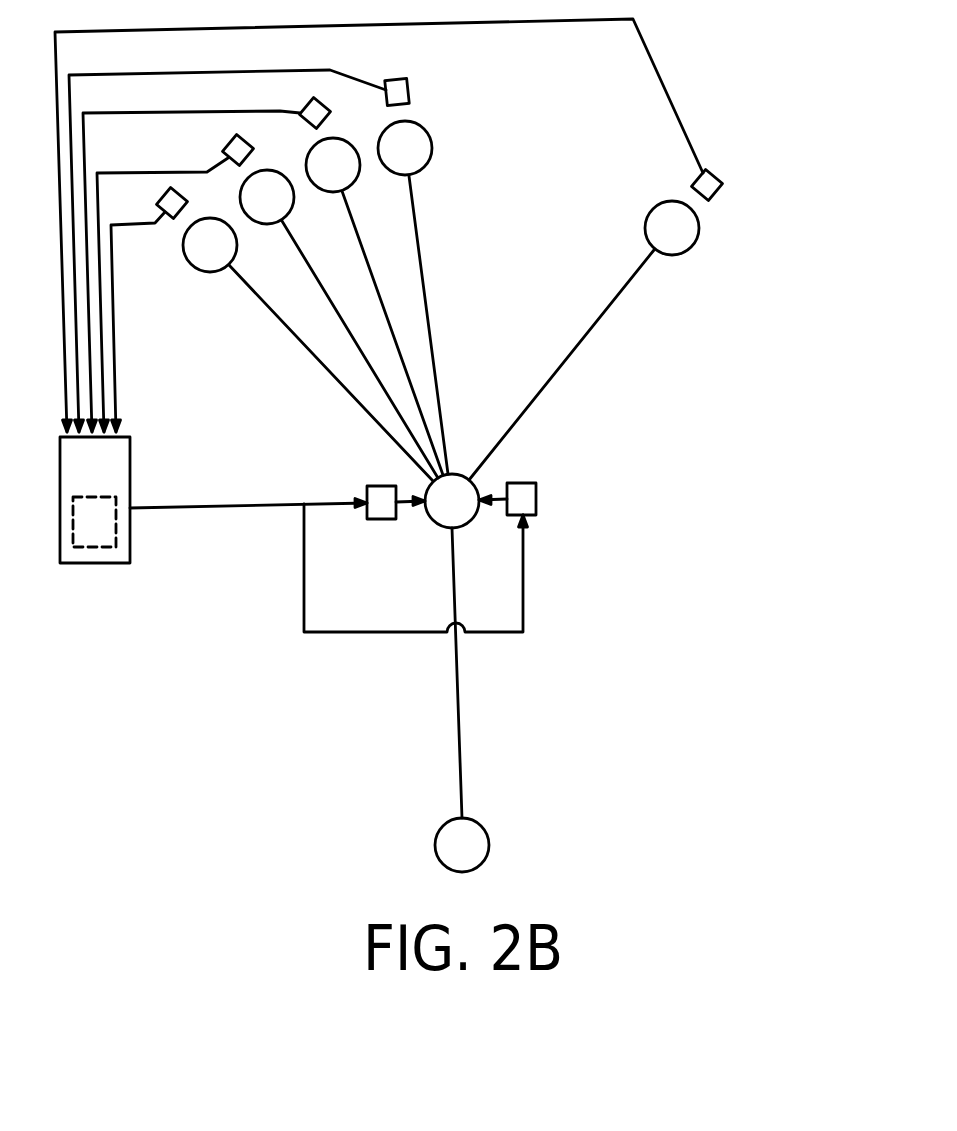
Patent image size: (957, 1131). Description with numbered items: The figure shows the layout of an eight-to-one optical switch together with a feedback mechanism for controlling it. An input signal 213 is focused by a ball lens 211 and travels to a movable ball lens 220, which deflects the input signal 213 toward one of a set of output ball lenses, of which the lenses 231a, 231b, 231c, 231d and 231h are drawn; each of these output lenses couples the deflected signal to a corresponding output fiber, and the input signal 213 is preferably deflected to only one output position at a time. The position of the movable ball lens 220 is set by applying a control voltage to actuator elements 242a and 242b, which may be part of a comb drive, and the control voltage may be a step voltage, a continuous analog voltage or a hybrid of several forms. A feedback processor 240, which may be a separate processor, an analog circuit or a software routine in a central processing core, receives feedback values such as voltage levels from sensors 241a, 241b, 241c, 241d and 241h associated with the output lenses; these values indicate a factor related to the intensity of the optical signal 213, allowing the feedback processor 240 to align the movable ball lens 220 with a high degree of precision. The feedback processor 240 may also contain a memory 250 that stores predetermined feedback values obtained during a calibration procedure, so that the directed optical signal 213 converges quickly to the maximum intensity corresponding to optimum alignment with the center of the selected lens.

The ball lens 211 is at (487, 835).
The input signal 213 is at (459, 735).
The movable ball lens 220 is at (462, 525).
The output ball lens 231a is at (212, 273).
The output ball lens 231b is at (262, 225).
The output ball lens 231c is at (328, 192).
The output ball lens 231d is at (425, 163).
The output ball lens 231h is at (690, 250).
The feedback processor 240 is at (130, 470).
The sensor 241a is at (168, 218).
The sensor 241b is at (224, 150).
The sensor 241c is at (315, 98).
The sensor 241d is at (408, 93).
The sensor 241h is at (722, 190).
The actuator element 242a is at (381, 519).
The actuator element 242b is at (536, 498).
The memory 250 is at (116, 540).